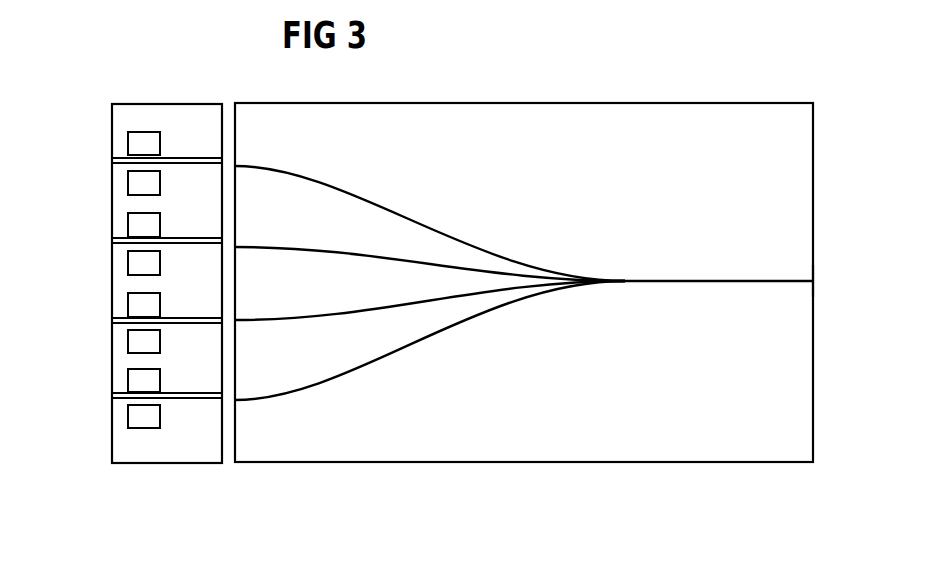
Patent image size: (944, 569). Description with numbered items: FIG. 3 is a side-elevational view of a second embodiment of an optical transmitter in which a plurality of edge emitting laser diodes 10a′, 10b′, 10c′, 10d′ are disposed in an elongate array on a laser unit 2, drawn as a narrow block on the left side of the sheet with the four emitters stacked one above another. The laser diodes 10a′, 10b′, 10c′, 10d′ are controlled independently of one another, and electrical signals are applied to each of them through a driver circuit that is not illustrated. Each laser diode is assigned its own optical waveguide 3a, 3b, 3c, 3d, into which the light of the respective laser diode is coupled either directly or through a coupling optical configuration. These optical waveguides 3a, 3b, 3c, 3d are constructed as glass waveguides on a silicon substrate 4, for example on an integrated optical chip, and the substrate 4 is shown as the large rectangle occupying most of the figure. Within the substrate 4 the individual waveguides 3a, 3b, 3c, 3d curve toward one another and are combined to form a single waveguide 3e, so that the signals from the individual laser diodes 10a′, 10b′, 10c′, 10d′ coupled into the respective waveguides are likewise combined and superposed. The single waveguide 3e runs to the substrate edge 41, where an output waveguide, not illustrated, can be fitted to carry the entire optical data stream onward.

The laser array 2 is at (172, 104).
The silicon substrate 4 is at (541, 104).
The edge emitting laser diode 10a′ is at (136, 147).
The edge emitting laser diode 10b′ is at (136, 227).
The edge emitting laser diode 10c′ is at (136, 306).
The edge emitting laser diode 10d′ is at (136, 382).
The optical waveguide 3a is at (288, 168).
The optical waveguide 3b is at (281, 247).
The optical waveguide 3c is at (277, 320).
The optical waveguide 3d is at (275, 400).
The single waveguide 3e is at (711, 281).
The substrate edge 41 is at (814, 280).